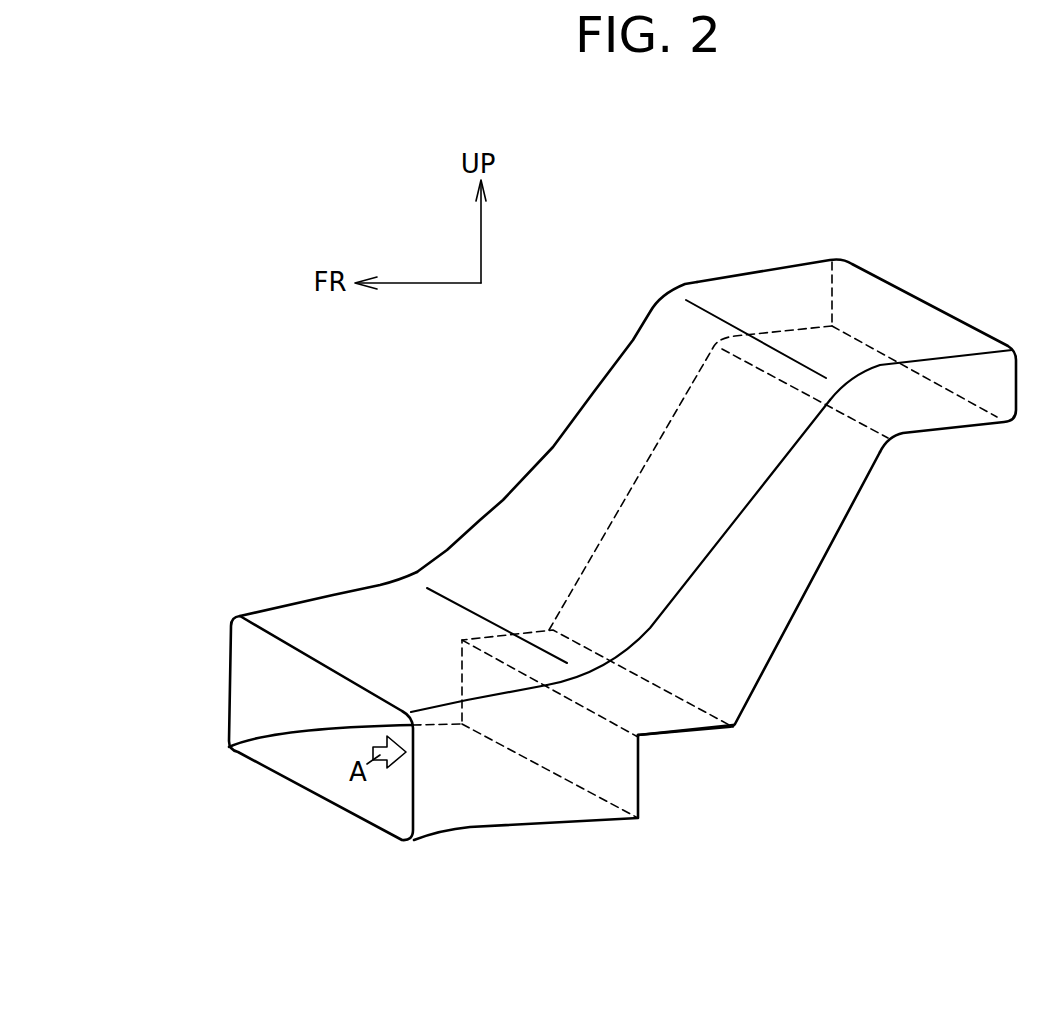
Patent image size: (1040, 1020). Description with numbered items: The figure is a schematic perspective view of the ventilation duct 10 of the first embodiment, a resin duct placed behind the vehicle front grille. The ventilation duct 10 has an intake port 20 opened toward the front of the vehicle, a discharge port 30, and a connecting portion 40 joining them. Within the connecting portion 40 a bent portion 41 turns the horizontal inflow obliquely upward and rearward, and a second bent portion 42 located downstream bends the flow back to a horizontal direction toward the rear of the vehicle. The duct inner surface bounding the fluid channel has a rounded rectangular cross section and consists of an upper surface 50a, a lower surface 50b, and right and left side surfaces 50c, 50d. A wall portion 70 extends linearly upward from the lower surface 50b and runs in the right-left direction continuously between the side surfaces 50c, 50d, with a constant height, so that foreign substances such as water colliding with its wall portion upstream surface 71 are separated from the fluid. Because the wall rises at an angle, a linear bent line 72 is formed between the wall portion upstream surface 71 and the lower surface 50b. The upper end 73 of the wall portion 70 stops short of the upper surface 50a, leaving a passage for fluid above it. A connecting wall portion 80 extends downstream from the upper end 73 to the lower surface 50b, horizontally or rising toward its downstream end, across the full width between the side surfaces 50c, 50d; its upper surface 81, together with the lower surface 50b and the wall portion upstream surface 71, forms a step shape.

The ventilation duct 10 is at (428, 420).
The intake port 20 is at (290, 648).
The discharge port 30 is at (888, 283).
The connecting portion 40 is at (612, 368).
The bent portion 41 is at (397, 556).
The second bent portion 42 is at (650, 273).
The upper surface 50a is at (362, 673).
The lower surface 50b is at (328, 783).
The right side surface 50c is at (253, 683).
The left side surface 50d is at (430, 787).
The wall portion 70 is at (640, 782).
The wall portion upstream surface 71 is at (543, 733).
The linear bent line 72 is at (597, 790).
The upper end 73 is at (583, 707).
The connecting wall portion 80 is at (690, 736).
The upper surface of the connecting wall portion 81 is at (667, 708).